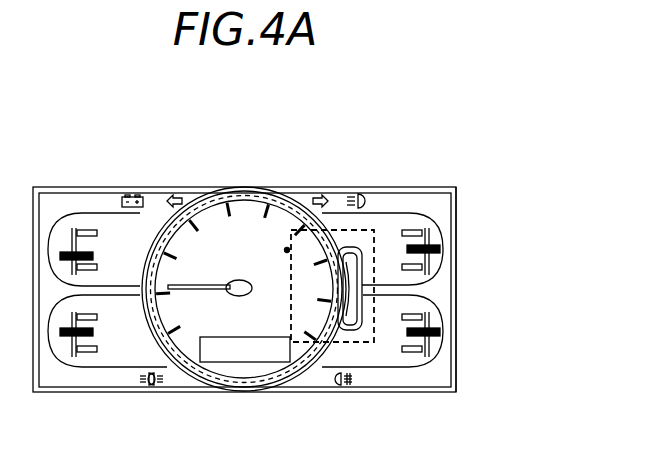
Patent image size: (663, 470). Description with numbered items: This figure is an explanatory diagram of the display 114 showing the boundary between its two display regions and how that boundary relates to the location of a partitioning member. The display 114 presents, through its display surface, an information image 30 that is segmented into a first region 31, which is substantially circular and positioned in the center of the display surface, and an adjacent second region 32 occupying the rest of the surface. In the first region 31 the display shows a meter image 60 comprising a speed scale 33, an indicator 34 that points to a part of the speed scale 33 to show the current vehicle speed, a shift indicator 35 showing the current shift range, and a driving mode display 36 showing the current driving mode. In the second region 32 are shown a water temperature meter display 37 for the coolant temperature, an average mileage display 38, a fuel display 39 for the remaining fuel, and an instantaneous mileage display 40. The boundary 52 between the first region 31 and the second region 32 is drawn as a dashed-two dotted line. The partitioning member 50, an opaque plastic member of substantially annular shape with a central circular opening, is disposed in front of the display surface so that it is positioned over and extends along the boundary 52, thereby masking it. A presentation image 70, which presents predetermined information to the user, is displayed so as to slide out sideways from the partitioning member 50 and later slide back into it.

The information image 30 is at (437, 375).
The display 114 is at (457, 204).
The second region 32 is at (405, 198).
The water temperature meter display 37 is at (103, 214).
The average mileage display 38 is at (103, 355).
The fuel display 39 is at (430, 215).
The instantaneous mileage display 40 is at (407, 356).
The partitioning member 50 is at (191, 212).
The indicator 34 is at (181, 372).
The boundary 52 is at (211, 198).
The first region 31 is at (312, 362).
The shift indicator 35 is at (247, 207).
The meter image 60 is at (228, 386).
The driving mode display 36 is at (262, 376).
The speed scale 33 is at (284, 213).
The presentation image 70 is at (362, 292).